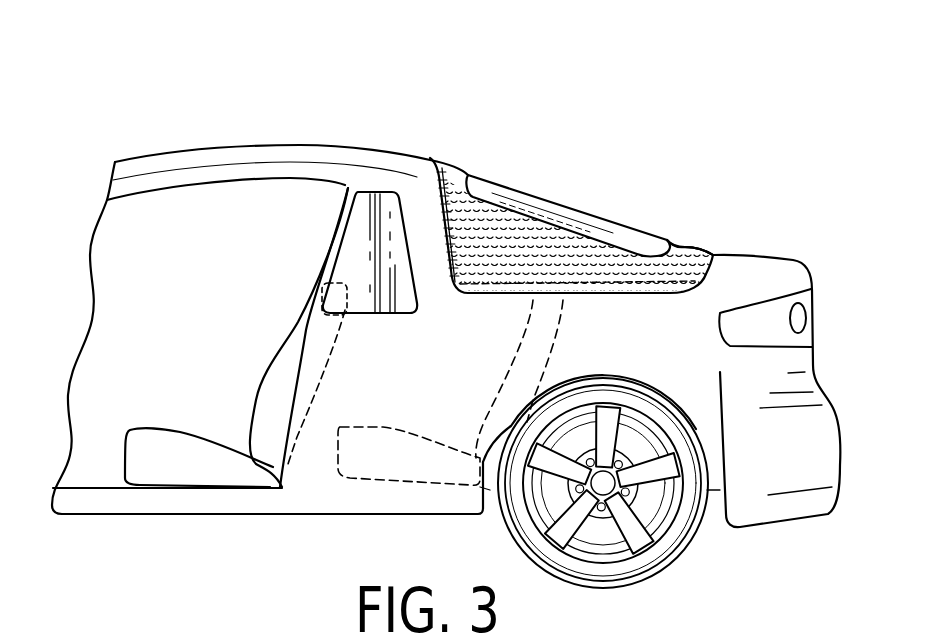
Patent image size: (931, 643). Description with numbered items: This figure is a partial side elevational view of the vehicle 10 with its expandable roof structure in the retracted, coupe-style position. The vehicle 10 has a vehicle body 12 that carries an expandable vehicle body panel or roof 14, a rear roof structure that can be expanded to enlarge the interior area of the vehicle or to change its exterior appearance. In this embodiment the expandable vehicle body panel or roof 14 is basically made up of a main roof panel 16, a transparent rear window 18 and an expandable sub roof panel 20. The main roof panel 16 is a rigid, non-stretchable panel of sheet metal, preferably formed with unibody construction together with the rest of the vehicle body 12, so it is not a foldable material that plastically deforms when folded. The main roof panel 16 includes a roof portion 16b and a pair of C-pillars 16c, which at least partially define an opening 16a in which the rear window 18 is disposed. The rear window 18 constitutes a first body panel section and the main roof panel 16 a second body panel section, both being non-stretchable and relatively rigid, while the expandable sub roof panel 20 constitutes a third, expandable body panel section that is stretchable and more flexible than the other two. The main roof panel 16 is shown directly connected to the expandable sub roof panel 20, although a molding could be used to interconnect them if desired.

The vehicle 10 is at (131, 136).
The vehicle body 12 is at (421, 412).
The expandable vehicle body panel or roof 14 is at (589, 157).
The main roof panel 16 is at (397, 150).
The opening 16a is at (695, 247).
The roof portion 16b is at (305, 145).
The C-pillars 16c is at (430, 243).
The rear window 18 is at (544, 201).
The expandable sub roof panel 20 is at (672, 194).